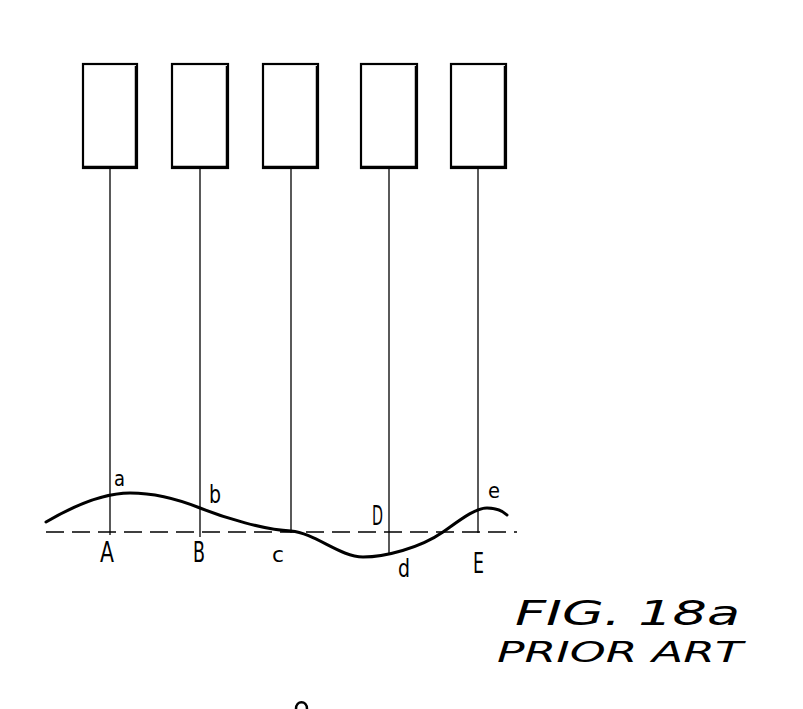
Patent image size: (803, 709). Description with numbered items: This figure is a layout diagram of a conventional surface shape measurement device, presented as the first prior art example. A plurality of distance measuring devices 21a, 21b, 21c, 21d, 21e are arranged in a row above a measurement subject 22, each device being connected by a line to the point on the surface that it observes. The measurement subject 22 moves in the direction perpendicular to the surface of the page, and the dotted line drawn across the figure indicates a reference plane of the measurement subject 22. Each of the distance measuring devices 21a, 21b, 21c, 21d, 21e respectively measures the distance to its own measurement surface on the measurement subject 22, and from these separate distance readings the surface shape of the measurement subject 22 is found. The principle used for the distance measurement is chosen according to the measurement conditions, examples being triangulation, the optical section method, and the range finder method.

The distance measuring device 21a is at (112, 63).
The distance measuring device 21b is at (203, 63).
The distance measuring device 21c is at (293, 63).
The distance measuring device 21d is at (392, 63).
The distance measuring device 21e is at (482, 63).
The measurement subject 22 is at (270, 506).